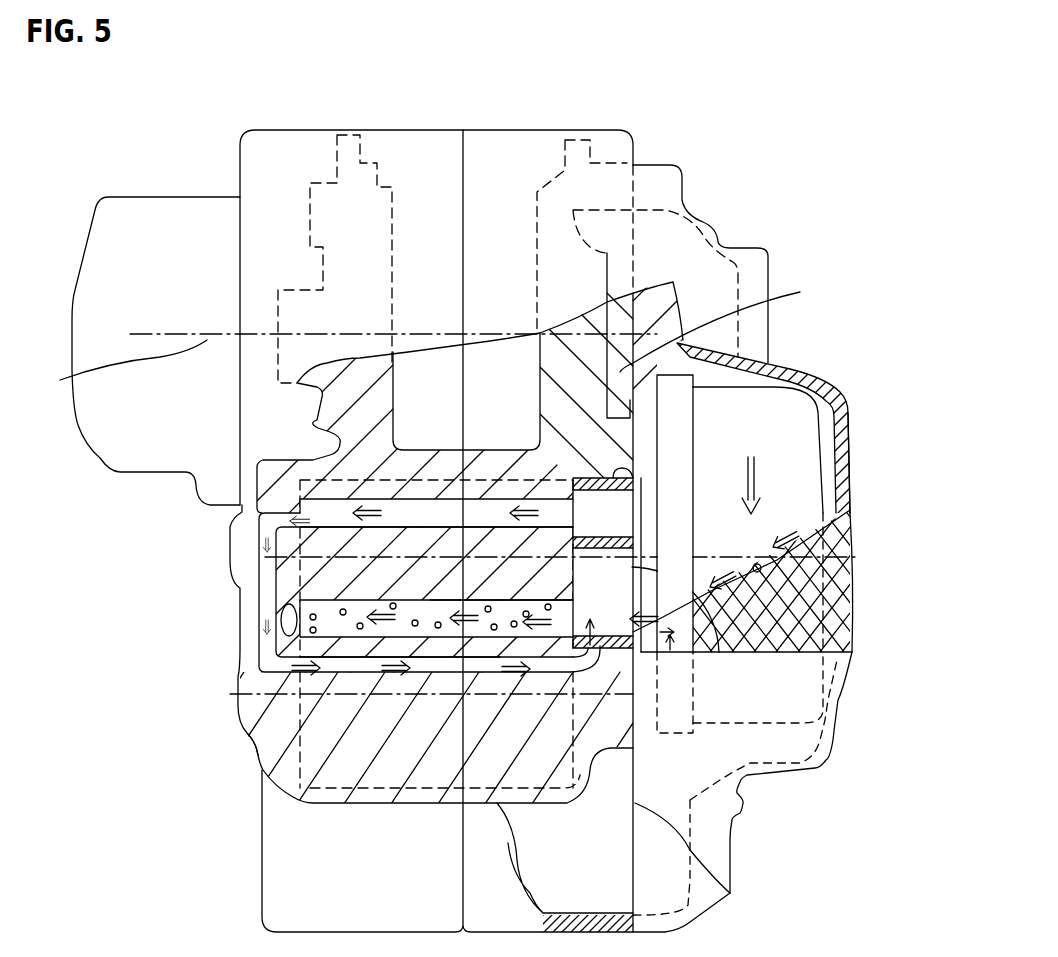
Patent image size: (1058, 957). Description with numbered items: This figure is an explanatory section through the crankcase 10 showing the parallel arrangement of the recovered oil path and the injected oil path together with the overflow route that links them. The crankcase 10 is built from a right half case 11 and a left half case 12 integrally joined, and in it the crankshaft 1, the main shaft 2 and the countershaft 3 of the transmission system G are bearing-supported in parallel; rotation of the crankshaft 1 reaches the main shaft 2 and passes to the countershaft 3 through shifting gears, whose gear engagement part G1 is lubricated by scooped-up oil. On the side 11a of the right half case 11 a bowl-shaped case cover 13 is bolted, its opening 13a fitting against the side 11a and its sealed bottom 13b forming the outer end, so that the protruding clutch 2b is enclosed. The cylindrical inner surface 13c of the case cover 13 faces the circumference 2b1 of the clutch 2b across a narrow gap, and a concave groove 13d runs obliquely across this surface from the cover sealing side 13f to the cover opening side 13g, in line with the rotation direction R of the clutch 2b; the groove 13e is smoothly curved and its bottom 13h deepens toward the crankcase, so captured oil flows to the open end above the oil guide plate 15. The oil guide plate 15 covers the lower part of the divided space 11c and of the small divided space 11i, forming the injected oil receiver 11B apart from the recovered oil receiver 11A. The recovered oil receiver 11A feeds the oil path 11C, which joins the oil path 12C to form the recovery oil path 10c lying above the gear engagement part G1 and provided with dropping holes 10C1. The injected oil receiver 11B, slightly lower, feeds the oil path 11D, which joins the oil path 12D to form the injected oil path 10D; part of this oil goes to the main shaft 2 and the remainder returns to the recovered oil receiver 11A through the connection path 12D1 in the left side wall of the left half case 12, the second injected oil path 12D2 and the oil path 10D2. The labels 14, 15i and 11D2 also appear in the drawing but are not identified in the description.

The crankshaft 1 is at (60, 380).
The main shaft 2 is at (258, 592).
The countershaft 3 is at (260, 733).
The crankcase 10 is at (500, 50).
The right half case 11 is at (494, 153).
The left half case 12 is at (410, 150).
The case cover 13 is at (836, 382).
The opening 13a is at (800, 292).
The bottom 13b is at (845, 435).
The cylindrical inner surface 13c is at (741, 370).
The concave groove 13d is at (838, 650).
The groove 13e is at (853, 615).
The cover sealing side 13f is at (850, 514).
The cover opening side 13g is at (675, 652).
The bottom of groove 13h is at (852, 578).
The lower chamber 14 is at (790, 668).
The oil guide plate 15 is at (727, 652).
The inner wall 15i is at (700, 652).
The clutch 2b is at (827, 710).
The circumference of the clutch 2b1 is at (787, 372).
The side of the right half case 11a is at (730, 893).
The recovered oil receiver 11A is at (624, 607).
The injected oil receiver 11B is at (624, 531).
The small divided space 11i is at (590, 478).
The divided space 11c is at (603, 656).
The recovery oil path 10c is at (531, 562).
The dropping holes 10C1 is at (343, 613).
The injected oil path 10D is at (463, 558).
The second oil path 10D2 is at (465, 731).
The oil path 11C is at (525, 602).
The oil path 11D is at (450, 525).
The cover lower passage 11D2 is at (460, 687).
The oil path 12C is at (494, 602).
The oil path 12D is at (400, 522).
The connection path 12D1 is at (260, 548).
The second injected oil path 12D2 is at (422, 677).
The transmission system G is at (366, 642).
The gear engagement part G1 is at (332, 756).